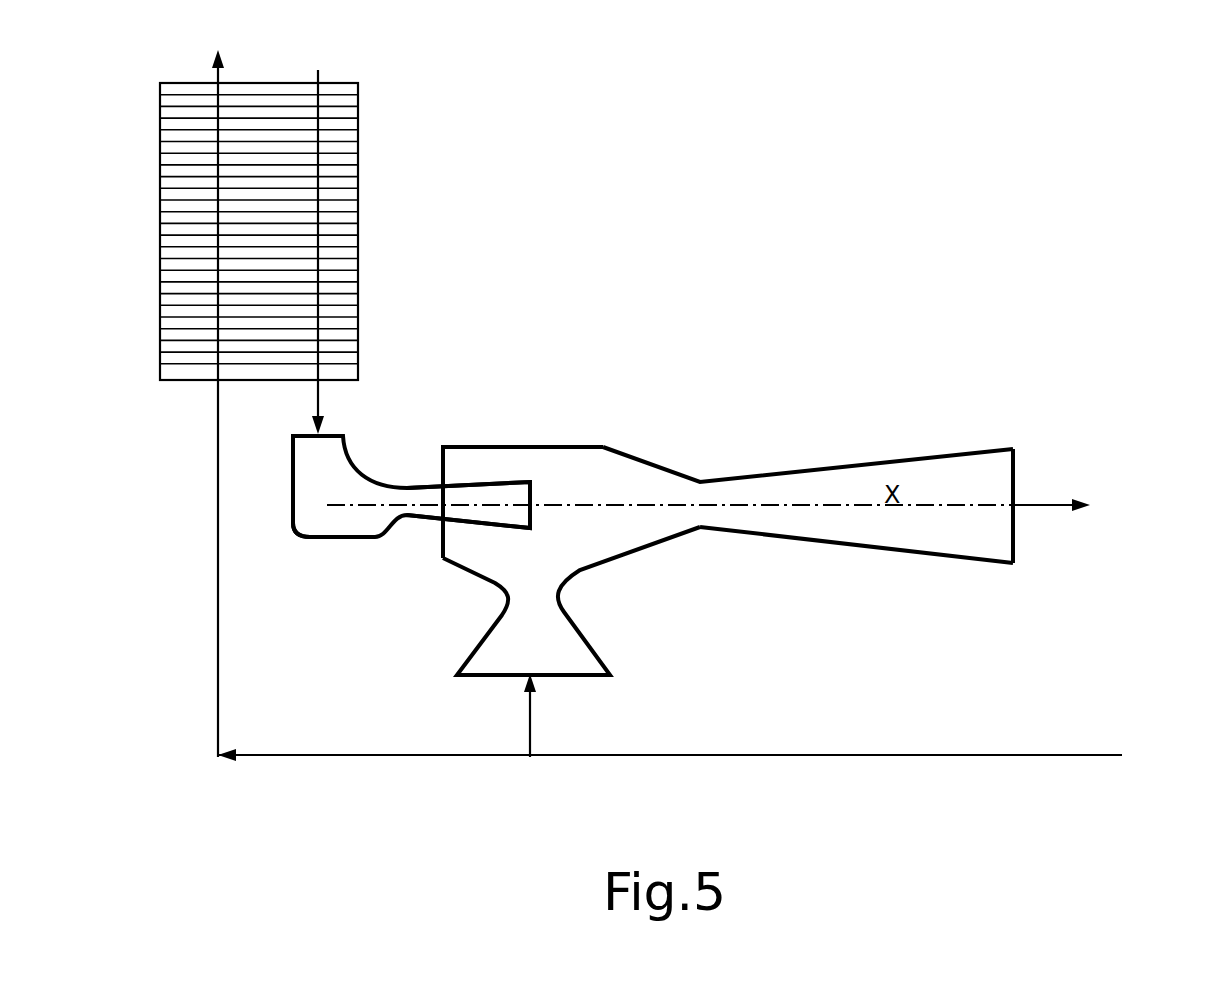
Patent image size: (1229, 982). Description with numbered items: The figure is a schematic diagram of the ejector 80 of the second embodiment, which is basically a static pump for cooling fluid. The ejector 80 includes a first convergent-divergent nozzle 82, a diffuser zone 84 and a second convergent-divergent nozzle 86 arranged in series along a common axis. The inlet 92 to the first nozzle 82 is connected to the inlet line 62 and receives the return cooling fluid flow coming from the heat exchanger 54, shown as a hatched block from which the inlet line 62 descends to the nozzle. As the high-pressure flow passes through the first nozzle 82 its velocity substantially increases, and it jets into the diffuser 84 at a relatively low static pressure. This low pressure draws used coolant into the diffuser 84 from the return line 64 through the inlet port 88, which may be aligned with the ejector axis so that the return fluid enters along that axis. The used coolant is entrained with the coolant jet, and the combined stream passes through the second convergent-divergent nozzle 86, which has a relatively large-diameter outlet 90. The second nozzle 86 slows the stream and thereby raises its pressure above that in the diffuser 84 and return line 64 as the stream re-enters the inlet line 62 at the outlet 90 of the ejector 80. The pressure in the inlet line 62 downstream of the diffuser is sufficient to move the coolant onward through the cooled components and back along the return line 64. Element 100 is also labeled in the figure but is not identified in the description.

The heat exchanger 54 is at (160, 270).
The inlet line 62 is at (318, 155).
The return line 64 is at (790, 755).
The ejector 80 is at (730, 477).
The first convergent-divergent nozzle 82 is at (320, 537).
The diffuser zone 84 is at (498, 565).
The second convergent-divergent nozzle 86 is at (735, 530).
The inlet port 88 is at (547, 647).
The outlet 90 is at (1008, 543).
The inlet 92 is at (337, 433).
The nozzle 100 is at (520, 480).